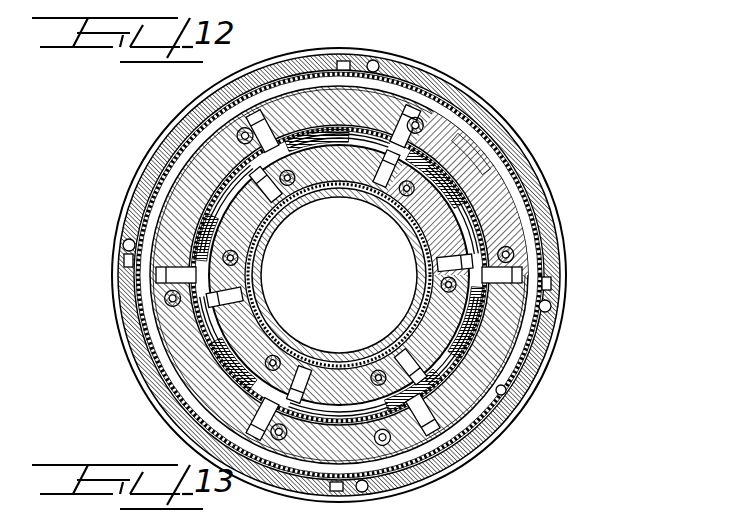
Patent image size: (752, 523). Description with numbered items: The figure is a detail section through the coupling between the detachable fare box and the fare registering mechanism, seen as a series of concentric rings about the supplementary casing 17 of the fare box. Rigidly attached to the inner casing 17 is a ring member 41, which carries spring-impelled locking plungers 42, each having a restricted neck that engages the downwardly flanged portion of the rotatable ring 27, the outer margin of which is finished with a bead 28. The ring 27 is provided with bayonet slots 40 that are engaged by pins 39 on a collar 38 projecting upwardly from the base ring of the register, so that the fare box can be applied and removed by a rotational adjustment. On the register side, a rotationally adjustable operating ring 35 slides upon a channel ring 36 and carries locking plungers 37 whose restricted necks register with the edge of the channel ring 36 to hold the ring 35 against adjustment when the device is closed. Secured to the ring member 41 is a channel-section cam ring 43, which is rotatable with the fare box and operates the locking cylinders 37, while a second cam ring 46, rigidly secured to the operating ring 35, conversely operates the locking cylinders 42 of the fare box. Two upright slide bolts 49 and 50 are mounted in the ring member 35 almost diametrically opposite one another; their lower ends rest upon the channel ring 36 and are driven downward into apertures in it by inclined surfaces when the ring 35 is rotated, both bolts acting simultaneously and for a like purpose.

The supplementary casing 17 is at (331, 200).
The rotatable ring 27 is at (538, 215).
The bead 28 is at (552, 238).
The operating ring 35 is at (500, 338).
The channel ring 36 is at (513, 352).
The locking plunger 37 is at (522, 278).
The collar 38 is at (506, 390).
The pin 39 is at (346, 62).
The bayonet slot 40 is at (379, 65).
The ring member 41 is at (253, 333).
The locking plunger 42 is at (378, 178).
The cam ring 43 is at (262, 228).
The cam ring 46 is at (223, 360).
The slide bolt 49 is at (472, 152).
The slide bolt 50 is at (240, 400).